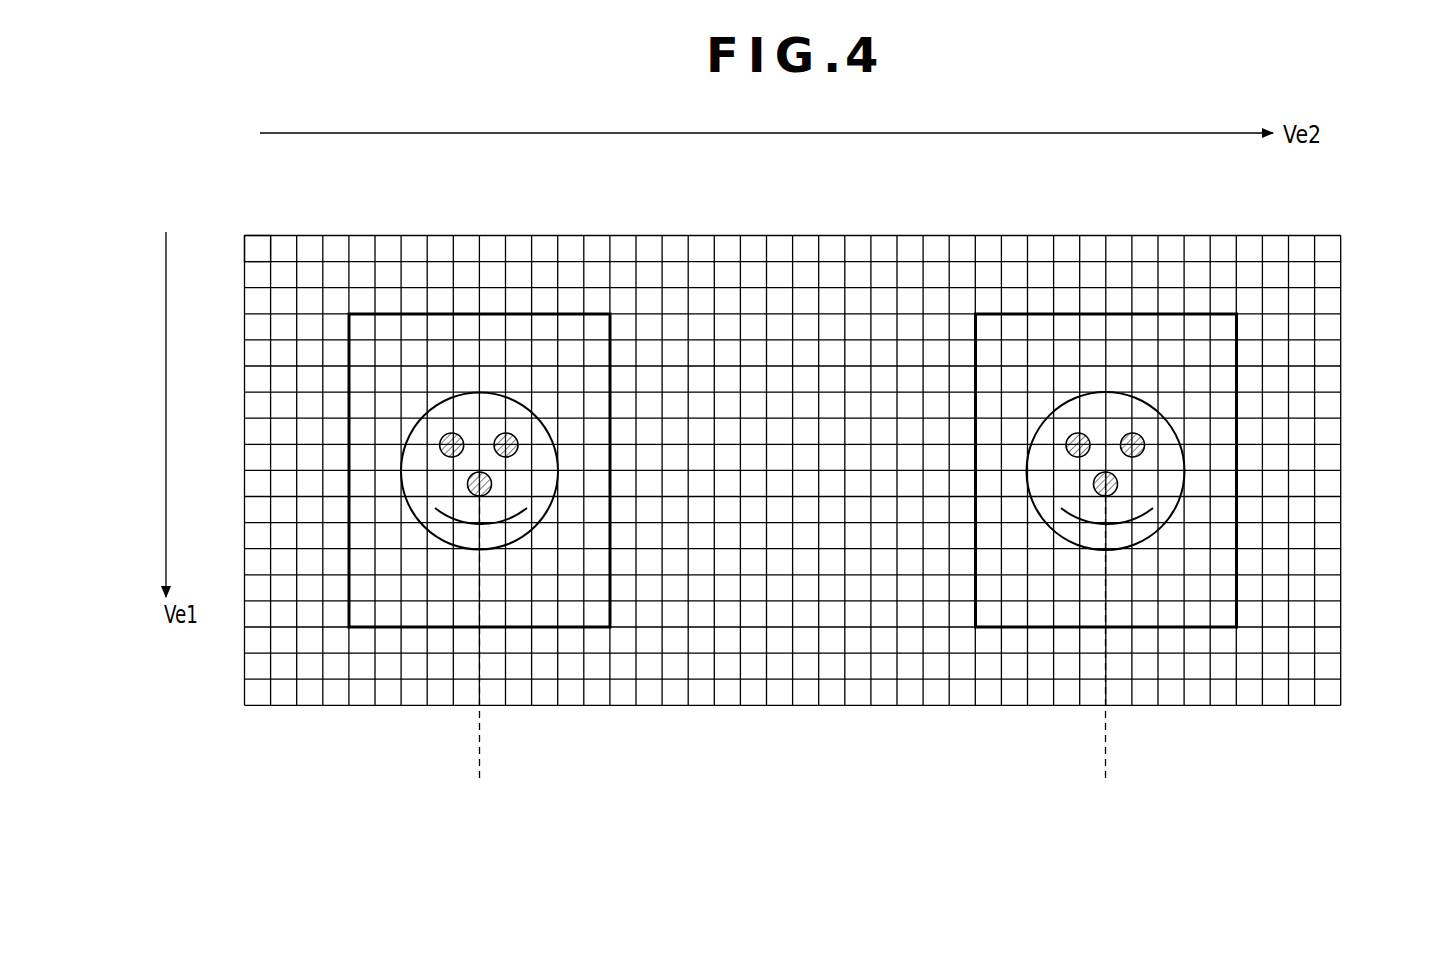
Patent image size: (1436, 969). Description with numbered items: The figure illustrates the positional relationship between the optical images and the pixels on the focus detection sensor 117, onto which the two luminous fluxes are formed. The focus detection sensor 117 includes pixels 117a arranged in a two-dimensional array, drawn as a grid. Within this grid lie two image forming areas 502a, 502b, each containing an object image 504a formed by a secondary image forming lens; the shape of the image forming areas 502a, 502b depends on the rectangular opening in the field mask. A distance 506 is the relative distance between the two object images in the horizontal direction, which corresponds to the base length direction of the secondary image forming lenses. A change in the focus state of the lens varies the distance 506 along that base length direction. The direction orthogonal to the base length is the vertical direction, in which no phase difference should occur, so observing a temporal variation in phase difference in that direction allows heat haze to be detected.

The focus detection sensor 117 is at (1342, 244).
The pixels 117a is at (258, 248).
The image forming area 502a is at (462, 313).
The image forming area 502b is at (1089, 313).
The object image 504a is at (412, 437).
The distance 506 is at (1104, 745).